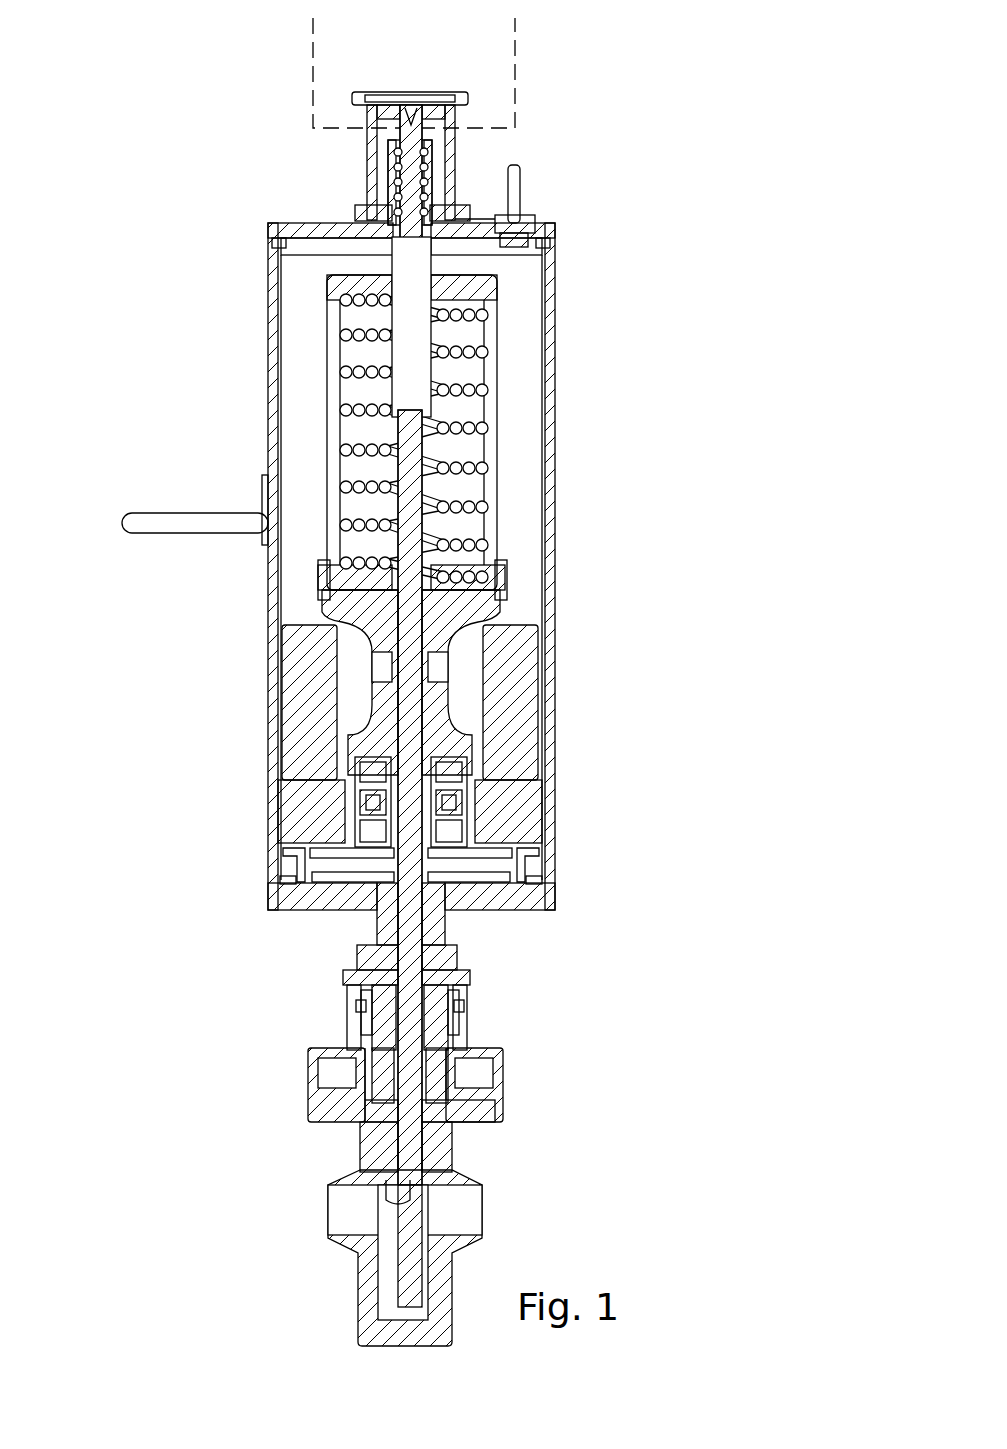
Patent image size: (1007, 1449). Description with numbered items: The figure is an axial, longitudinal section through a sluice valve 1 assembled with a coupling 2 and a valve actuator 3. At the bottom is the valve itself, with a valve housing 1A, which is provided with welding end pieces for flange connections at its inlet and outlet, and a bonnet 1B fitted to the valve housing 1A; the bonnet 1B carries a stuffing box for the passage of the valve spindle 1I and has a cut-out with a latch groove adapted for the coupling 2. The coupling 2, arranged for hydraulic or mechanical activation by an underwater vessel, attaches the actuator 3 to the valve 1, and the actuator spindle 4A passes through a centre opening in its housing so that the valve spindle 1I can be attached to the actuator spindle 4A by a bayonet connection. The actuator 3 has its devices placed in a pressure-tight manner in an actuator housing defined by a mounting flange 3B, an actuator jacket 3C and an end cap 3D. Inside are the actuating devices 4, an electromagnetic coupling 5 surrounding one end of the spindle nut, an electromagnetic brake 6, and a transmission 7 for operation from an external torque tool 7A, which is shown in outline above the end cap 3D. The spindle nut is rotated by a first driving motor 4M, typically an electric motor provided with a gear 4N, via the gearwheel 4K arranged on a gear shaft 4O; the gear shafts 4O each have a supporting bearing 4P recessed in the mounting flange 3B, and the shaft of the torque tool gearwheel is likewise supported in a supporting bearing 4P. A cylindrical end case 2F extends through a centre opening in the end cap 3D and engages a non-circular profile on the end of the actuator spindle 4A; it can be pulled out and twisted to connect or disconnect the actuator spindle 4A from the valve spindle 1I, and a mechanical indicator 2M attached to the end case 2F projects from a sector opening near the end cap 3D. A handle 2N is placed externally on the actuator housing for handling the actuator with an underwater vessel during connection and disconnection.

The sluice valve 1 is at (195, 1247).
The valve housing 1A is at (437, 1140).
The bonnet 1B is at (505, 1072).
The valve spindle 1I is at (403, 1140).
The coupling 2 is at (483, 1016).
The end case 2F is at (410, 335).
The mechanical indicator 2M is at (355, 215).
The handle 2N is at (163, 512).
The valve actuator 3 is at (207, 185).
The mounting flange 3B is at (338, 897).
The actuator jacket 3C is at (266, 382).
The end cap 3D is at (290, 222).
The actuating devices 4 is at (300, 310).
The actuator spindle 4A is at (410, 605).
The gearwheel 4K is at (290, 862).
The first driving motor 4M is at (308, 677).
The gear 4N is at (308, 813).
The gear shaft 4O is at (285, 885).
The supporting bearing 4P is at (266, 900).
The electromagnetic coupling 5 is at (462, 817).
The electromagnetic brake 6 is at (465, 770).
The transmission 7 is at (470, 888).
The torque tool 7A is at (517, 68).